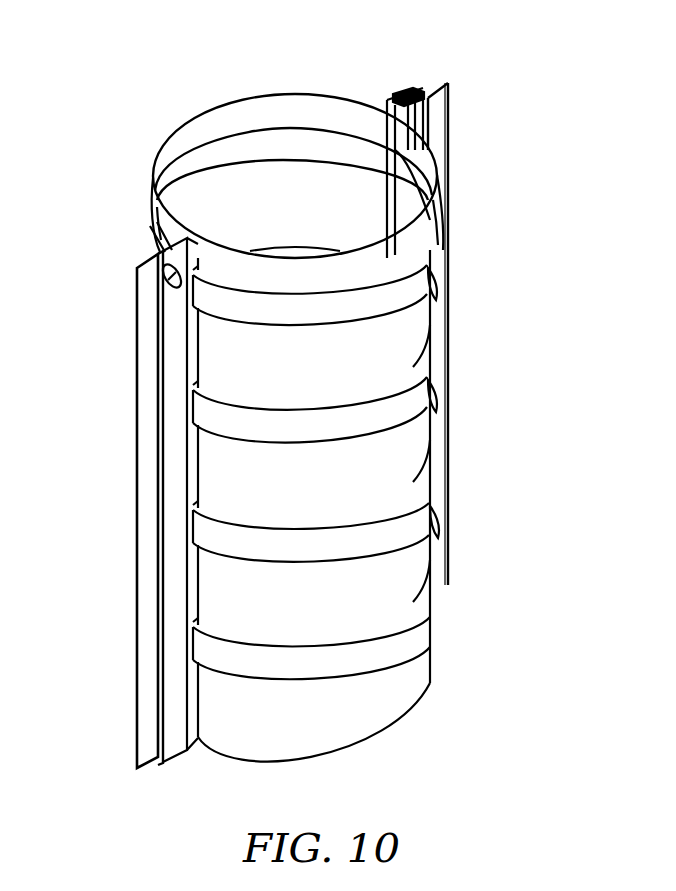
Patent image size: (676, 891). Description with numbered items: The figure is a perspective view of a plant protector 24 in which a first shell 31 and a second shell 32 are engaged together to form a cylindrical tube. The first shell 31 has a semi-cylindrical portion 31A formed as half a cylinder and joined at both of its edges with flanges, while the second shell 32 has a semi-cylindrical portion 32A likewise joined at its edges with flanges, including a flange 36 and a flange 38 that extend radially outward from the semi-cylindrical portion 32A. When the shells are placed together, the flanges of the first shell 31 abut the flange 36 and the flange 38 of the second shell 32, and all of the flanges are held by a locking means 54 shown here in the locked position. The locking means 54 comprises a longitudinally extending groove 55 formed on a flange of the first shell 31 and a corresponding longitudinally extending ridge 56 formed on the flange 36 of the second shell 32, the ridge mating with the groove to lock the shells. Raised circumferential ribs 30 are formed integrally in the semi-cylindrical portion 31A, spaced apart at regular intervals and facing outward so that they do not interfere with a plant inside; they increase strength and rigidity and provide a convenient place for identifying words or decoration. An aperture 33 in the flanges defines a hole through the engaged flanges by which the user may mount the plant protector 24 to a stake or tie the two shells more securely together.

The plant protector 24 is at (450, 260).
The raised circumferential ribs 30 is at (412, 425).
The first shell 31 is at (233, 97).
The semi-cylindrical portion 31A is at (150, 175).
The second shell 32 is at (427, 705).
The semi-cylindrical portion 32A is at (400, 573).
The aperture 33 is at (412, 88).
The flange 36 is at (142, 693).
The flange 38 is at (443, 152).
The locking means 54 is at (167, 765).
The longitudinally extending groove 55 is at (152, 573).
The longitudinally extending ridge 56 is at (150, 243).